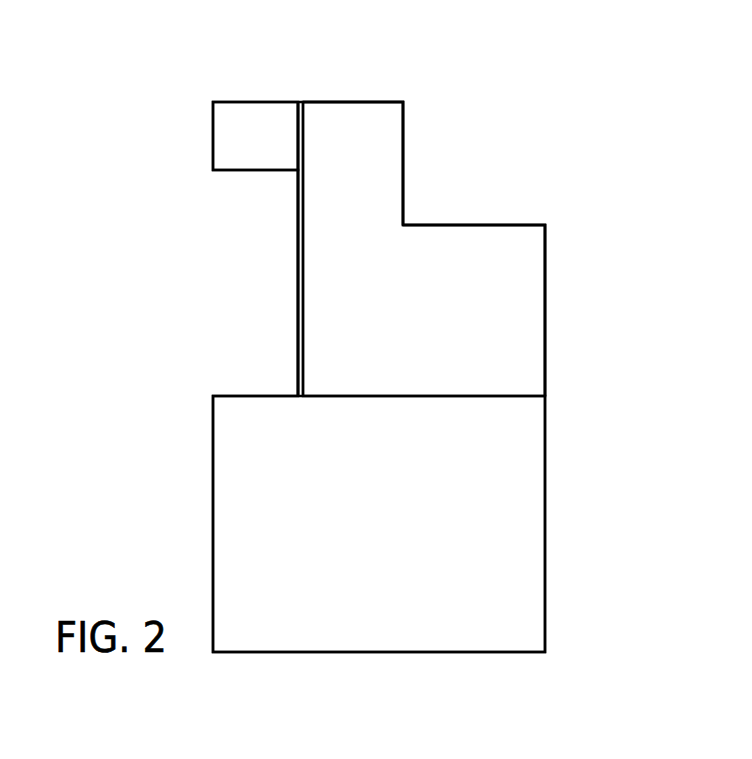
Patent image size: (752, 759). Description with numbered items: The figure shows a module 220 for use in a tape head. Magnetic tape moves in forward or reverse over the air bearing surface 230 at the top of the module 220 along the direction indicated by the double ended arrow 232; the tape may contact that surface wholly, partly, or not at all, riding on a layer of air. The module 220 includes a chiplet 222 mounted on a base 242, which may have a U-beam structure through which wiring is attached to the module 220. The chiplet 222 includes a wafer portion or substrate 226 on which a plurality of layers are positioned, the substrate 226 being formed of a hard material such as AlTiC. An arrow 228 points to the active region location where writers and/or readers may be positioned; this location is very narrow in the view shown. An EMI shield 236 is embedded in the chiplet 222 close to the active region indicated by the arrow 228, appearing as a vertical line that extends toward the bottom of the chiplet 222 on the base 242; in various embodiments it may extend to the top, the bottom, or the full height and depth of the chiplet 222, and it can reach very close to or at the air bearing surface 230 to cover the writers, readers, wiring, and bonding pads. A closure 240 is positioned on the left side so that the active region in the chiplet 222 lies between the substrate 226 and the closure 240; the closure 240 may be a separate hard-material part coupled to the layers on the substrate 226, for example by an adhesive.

The module 220 is at (166, 219).
The chiplet 222 is at (545, 312).
The substrate 226 is at (401, 325).
The arrow 228 is at (300, 100).
The air bearing surface 230 is at (358, 100).
The double ended arrow 232 is at (148, 81).
The EMI shield 236 is at (303, 247).
The closure 240 is at (233, 147).
The base 242 is at (356, 538).